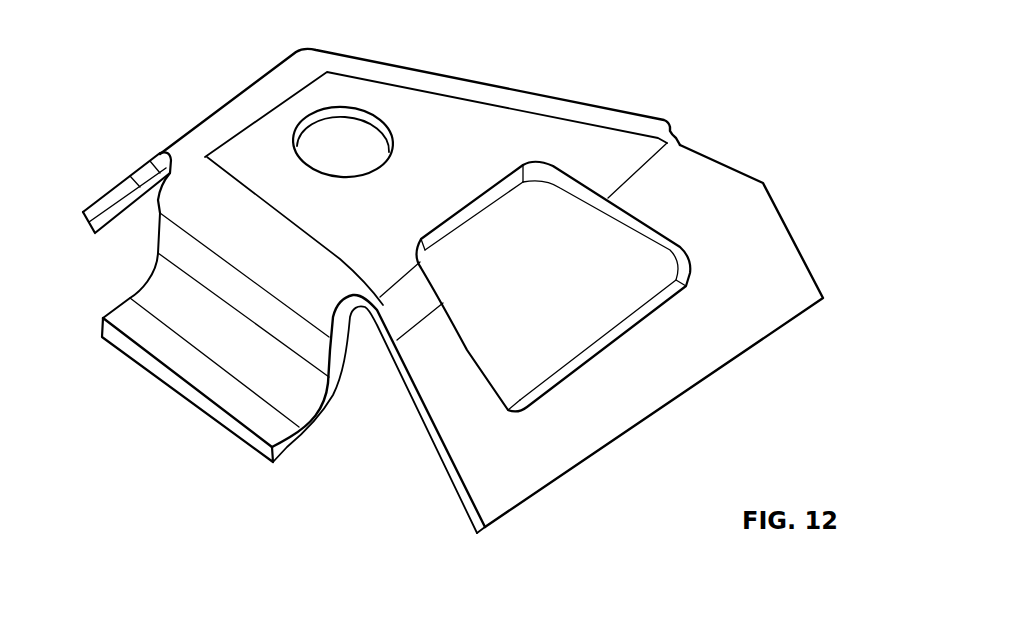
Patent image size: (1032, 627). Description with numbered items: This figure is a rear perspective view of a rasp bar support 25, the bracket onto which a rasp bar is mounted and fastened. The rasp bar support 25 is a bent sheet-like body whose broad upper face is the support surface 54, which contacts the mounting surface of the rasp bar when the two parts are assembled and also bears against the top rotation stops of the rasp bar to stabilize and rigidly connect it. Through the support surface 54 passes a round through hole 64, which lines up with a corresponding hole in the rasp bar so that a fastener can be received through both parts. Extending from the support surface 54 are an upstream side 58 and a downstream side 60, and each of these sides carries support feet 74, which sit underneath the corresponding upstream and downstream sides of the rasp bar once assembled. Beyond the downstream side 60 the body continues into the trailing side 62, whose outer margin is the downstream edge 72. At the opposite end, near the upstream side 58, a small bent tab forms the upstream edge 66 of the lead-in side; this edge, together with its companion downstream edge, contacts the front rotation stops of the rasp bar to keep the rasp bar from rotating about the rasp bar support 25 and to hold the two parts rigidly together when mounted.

The rasp bar support 25 is at (675, 85).
The support surface 54 is at (465, 120).
The upstream side 58 is at (190, 308).
The downstream side 60 is at (537, 88).
The trailing side 62 is at (440, 430).
The through hole 64 is at (345, 143).
The upstream edge 66 is at (118, 203).
The downstream edge 72 is at (737, 170).
The support feet 74 is at (233, 402).